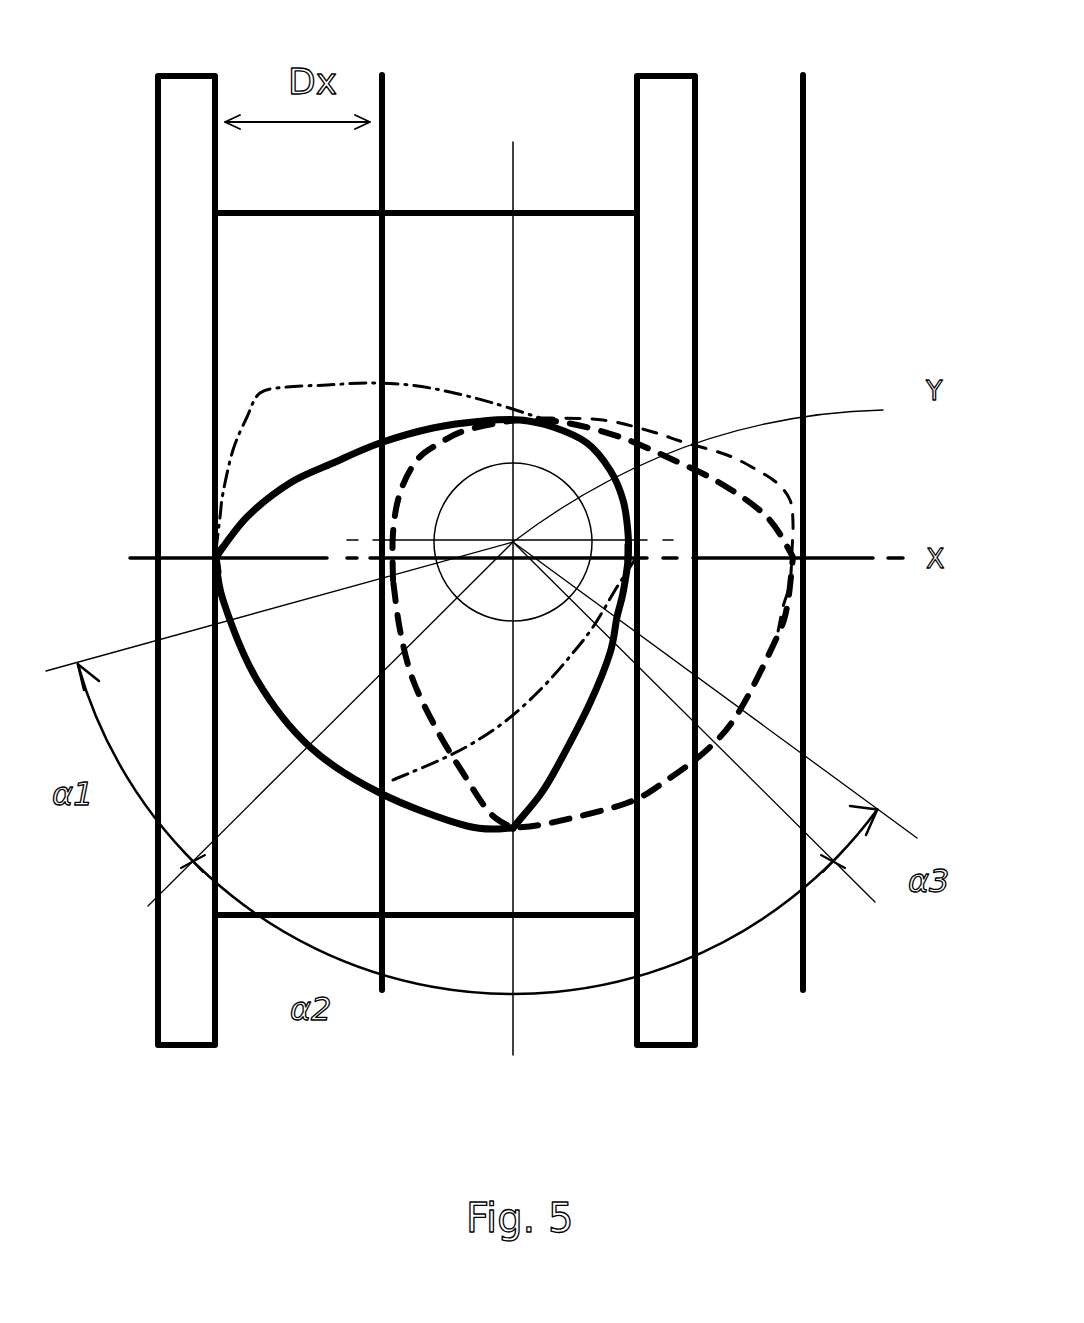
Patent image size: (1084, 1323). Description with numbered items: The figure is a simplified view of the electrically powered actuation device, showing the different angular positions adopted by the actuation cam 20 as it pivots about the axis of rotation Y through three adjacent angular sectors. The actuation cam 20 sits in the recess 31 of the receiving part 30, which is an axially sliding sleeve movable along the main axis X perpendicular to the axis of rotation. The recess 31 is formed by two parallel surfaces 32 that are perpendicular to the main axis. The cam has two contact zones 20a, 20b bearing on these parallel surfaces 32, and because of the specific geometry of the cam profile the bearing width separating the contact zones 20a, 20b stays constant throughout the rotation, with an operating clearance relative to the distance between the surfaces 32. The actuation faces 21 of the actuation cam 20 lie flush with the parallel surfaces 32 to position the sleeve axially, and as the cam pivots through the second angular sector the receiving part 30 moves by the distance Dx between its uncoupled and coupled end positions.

The actuation cam 20 is at (503, 416).
The contact zone 20a is at (214, 553).
The contact zone 20b is at (630, 578).
The actuation faces 21 is at (355, 438).
The receiving part 30 is at (558, 240).
The recess 31 is at (403, 240).
The parallel surfaces 32 is at (220, 960).